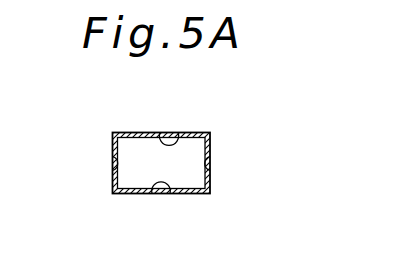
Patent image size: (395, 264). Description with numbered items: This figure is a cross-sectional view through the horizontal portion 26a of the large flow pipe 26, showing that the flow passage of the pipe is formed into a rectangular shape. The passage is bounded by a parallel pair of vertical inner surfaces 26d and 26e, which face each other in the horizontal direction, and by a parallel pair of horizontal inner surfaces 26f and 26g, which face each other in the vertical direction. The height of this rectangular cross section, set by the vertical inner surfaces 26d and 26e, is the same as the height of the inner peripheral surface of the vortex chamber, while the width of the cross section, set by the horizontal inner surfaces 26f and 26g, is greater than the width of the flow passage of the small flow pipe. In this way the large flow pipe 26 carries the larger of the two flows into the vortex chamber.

The large flow pipe 26 is at (210, 183).
The horizontal portion 26a is at (293, 182).
The inner surface 26d is at (210, 155).
The inner surface 26e is at (112, 160).
The inner surface 26f is at (181, 134).
The inner surface 26g is at (170, 192).